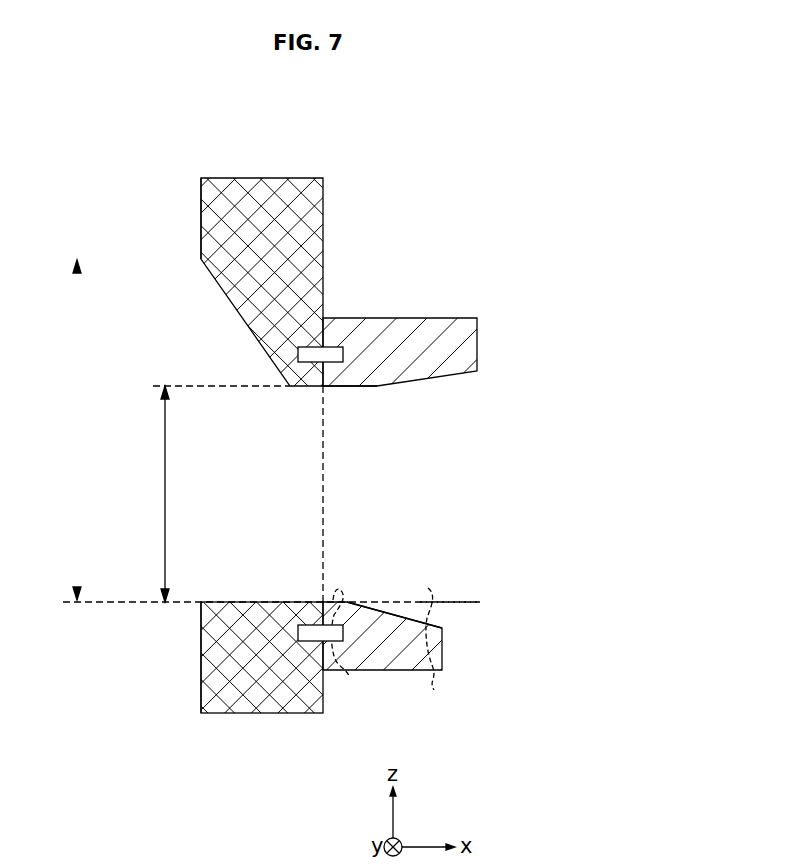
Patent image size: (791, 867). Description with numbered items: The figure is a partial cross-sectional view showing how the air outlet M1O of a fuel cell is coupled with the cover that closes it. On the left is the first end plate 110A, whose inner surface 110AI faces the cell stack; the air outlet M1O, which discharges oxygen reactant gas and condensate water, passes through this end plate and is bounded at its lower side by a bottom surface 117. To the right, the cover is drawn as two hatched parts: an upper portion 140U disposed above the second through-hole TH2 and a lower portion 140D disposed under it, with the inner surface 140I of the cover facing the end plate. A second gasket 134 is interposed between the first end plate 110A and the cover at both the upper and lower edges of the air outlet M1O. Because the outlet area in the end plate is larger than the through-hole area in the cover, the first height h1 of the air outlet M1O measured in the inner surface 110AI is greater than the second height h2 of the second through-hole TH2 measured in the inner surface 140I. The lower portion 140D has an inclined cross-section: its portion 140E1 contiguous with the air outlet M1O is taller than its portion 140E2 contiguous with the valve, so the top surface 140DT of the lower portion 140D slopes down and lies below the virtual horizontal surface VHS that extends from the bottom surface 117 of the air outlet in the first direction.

The first end plate 110A is at (275, 183).
The inner surface of the first end plate 110AI is at (201, 190).
The second gasket 134 is at (333, 352).
The upper portion of the cover 140U is at (428, 352).
The inner surface of the cover 140I is at (322, 386).
The second through-hole TH2 is at (384, 490).
The bottom surface of the air outlet 117 is at (275, 602).
The air outlet M1O is at (242, 530).
The top surface of the lower portion 140DT is at (390, 614).
The virtual horizontal surface VHS is at (466, 600).
The lower portion of the cover 140D is at (445, 648).
The portion contiguous with the air outlet 140E1 is at (334, 687).
The portion contiguous with the valve 140E2 is at (435, 683).
The first height h1 is at (66, 430).
The second height h2 is at (154, 494).